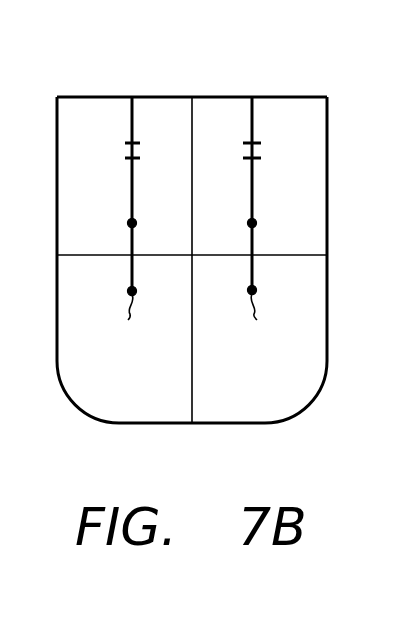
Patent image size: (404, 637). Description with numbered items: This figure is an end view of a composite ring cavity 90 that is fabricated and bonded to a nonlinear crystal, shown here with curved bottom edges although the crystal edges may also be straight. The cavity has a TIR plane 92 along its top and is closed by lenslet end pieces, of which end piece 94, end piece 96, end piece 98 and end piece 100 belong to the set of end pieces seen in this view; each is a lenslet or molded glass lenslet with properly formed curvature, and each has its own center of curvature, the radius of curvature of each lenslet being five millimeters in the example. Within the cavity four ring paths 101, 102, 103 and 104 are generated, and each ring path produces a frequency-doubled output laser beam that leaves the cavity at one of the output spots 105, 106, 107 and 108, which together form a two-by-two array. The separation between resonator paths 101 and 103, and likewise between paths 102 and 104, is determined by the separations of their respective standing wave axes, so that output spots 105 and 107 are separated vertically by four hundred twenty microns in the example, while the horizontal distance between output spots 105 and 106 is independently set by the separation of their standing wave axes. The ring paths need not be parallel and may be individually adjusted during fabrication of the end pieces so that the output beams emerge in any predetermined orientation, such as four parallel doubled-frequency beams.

The composite ring cavity 90 is at (154, 84).
The TIR plane 92 is at (298, 96).
The end piece 94 is at (65, 198).
The end piece 96 is at (305, 191).
The end piece 98 is at (77, 384).
The end piece 100 is at (312, 343).
The ring path 101 is at (130, 187).
The ring path 102 is at (255, 187).
The ring path 103 is at (131, 273).
The ring path 104 is at (254, 272).
The output spot 105 is at (136, 224).
The output spot 106 is at (248, 224).
The output spot 107 is at (129, 325).
The output spot 108 is at (258, 325).